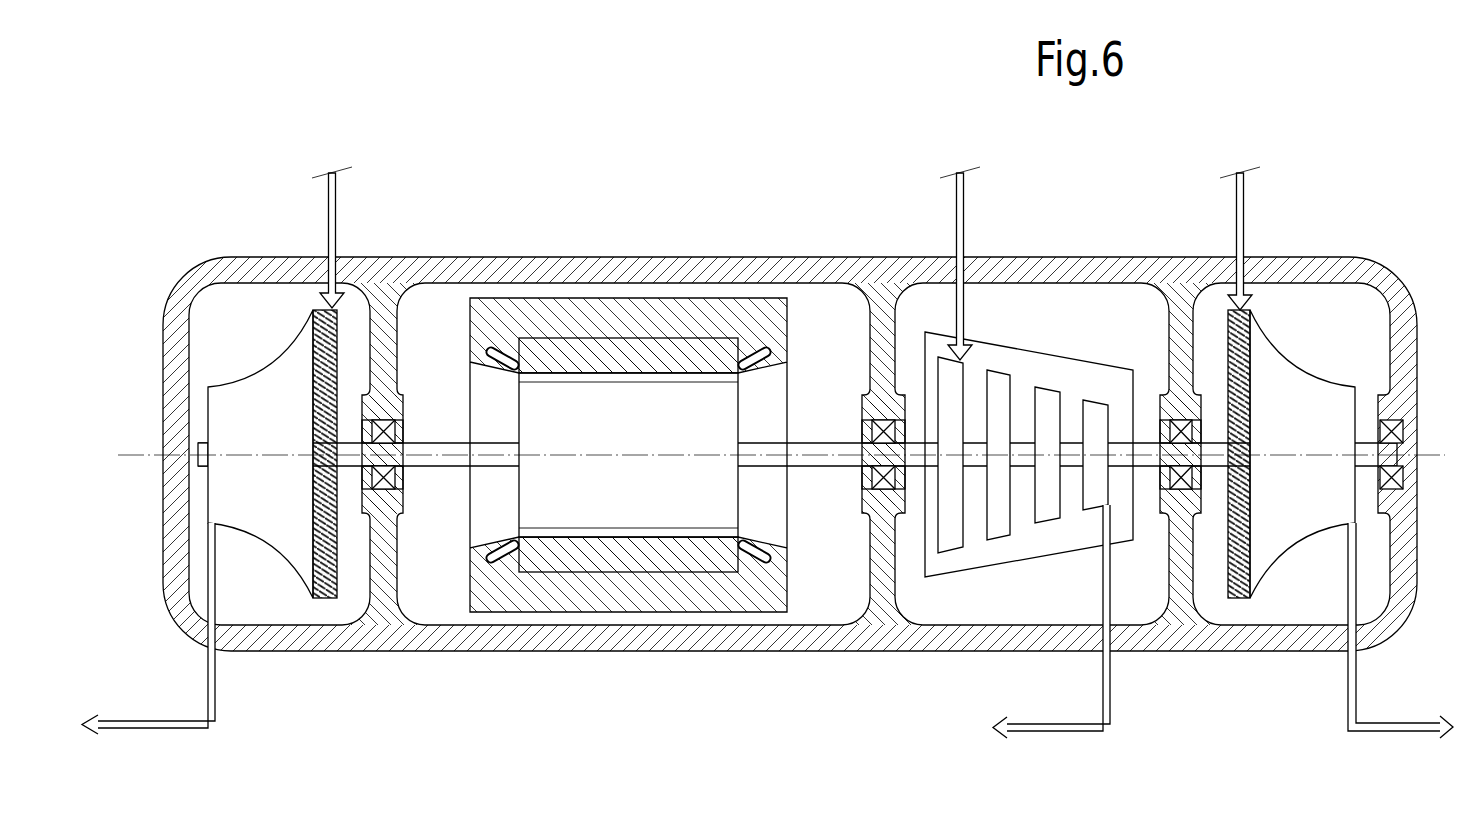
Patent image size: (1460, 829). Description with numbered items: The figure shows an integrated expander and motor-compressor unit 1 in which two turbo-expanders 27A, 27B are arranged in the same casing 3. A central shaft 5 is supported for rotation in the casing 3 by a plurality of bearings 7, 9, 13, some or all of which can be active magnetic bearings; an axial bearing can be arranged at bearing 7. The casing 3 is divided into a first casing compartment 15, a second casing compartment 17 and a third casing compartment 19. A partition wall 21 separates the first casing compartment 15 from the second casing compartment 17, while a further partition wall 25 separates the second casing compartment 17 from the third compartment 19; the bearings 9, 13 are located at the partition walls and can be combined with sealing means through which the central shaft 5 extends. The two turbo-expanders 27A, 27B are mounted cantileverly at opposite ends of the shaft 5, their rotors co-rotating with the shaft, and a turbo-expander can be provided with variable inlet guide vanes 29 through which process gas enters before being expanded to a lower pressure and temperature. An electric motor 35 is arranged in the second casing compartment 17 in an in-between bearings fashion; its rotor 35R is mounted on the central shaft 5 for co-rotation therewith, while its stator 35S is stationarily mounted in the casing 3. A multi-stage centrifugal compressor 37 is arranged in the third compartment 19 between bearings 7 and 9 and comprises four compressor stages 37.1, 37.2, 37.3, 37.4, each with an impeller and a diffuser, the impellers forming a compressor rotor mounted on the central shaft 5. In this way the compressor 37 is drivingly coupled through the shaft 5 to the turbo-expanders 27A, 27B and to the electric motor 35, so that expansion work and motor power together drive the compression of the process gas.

The integrated expander and motor-compressor unit 1 is at (698, 184).
The casing 3 is at (1322, 270).
The central shaft 5 is at (437, 457).
The bearing 7 is at (1178, 425).
The bearing 9 is at (890, 477).
The bearing 13 is at (393, 431).
The first casing compartment 15 is at (232, 325).
The second casing compartment 17 is at (812, 598).
The third casing compartment 19 is at (990, 607).
The partition wall 21 is at (385, 580).
The partition wall 25 is at (885, 577).
The turbo-expander 27A is at (257, 470).
The turbo-expander 27B is at (1293, 382).
The variable inlet guide vanes 29 is at (333, 598).
The electric motor 35 is at (618, 448).
The rotor 35R is at (651, 440).
The stator 35S is at (573, 590).
The compressor 37 is at (1041, 514).
The compressor stage 37.1 is at (953, 373).
The compressor stage 37.2 is at (1003, 382).
The compressor stage 37.3 is at (1055, 395).
The compressor stage 37.4 is at (1103, 405).